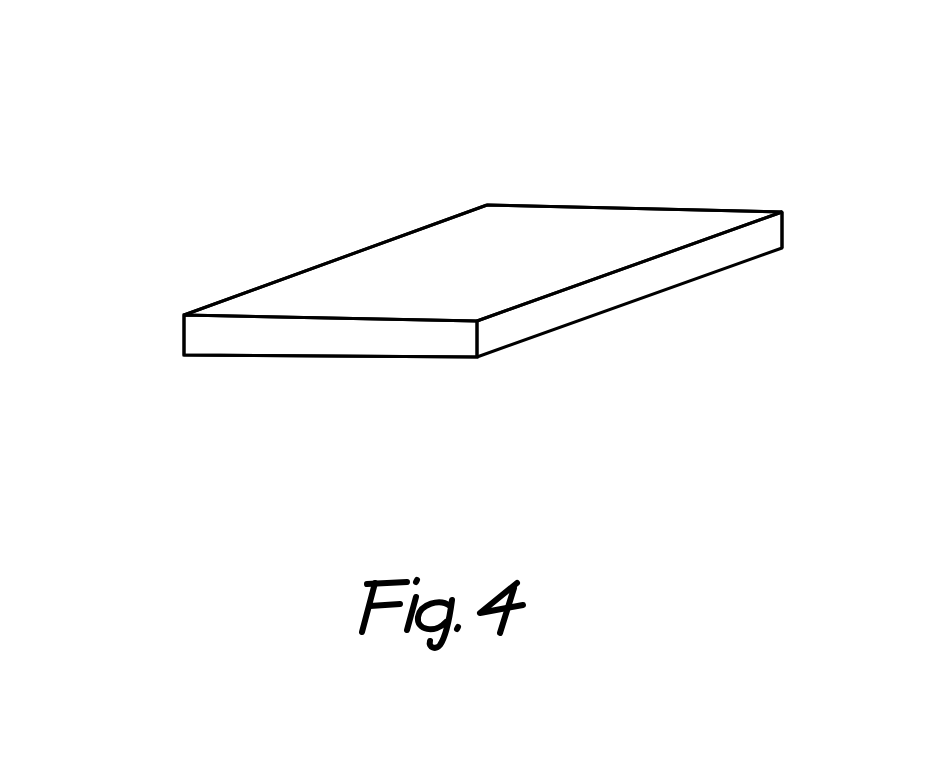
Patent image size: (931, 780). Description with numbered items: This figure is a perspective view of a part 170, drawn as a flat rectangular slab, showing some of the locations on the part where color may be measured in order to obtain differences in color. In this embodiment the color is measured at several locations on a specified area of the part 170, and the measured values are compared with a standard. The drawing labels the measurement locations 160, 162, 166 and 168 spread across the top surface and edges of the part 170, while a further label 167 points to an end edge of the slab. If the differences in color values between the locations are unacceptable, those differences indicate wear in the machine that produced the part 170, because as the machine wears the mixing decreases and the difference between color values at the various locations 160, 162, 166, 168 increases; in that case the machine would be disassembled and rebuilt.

The color measurement location 160 is at (440, 262).
The color measurement location 162 is at (498, 220).
The color measurement location 166 is at (497, 295).
The end edge 167 is at (728, 220).
The color measurement location 168 is at (293, 303).
The part 170 is at (268, 194).